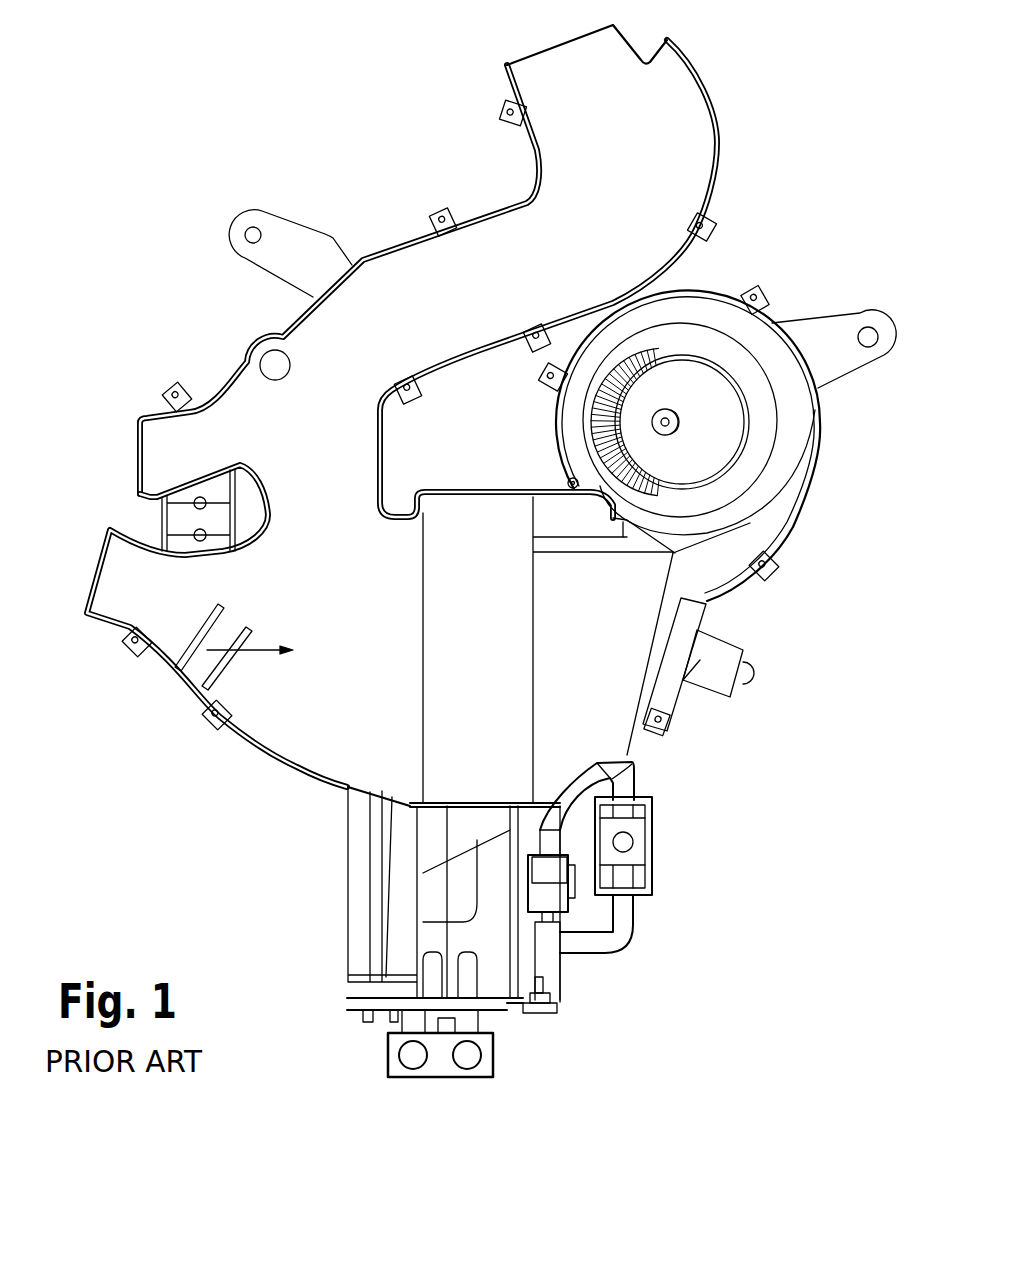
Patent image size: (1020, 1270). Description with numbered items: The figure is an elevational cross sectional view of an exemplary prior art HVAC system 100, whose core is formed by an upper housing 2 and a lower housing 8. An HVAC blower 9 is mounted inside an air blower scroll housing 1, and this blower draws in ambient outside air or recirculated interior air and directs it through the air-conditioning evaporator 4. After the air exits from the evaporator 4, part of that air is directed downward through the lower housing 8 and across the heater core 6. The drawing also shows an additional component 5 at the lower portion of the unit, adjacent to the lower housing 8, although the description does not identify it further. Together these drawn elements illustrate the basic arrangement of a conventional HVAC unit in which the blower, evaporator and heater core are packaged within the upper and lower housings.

The air blower scroll housing 1 is at (797, 486).
The upper housing 2 is at (640, 652).
The air-conditioning evaporator 4 is at (497, 731).
The control valve assembly 5 is at (487, 892).
The heater core 6 is at (228, 640).
The lower housing 8 is at (400, 808).
The HVAC blower 9 is at (637, 357).
The HVAC system 100 is at (782, 727).